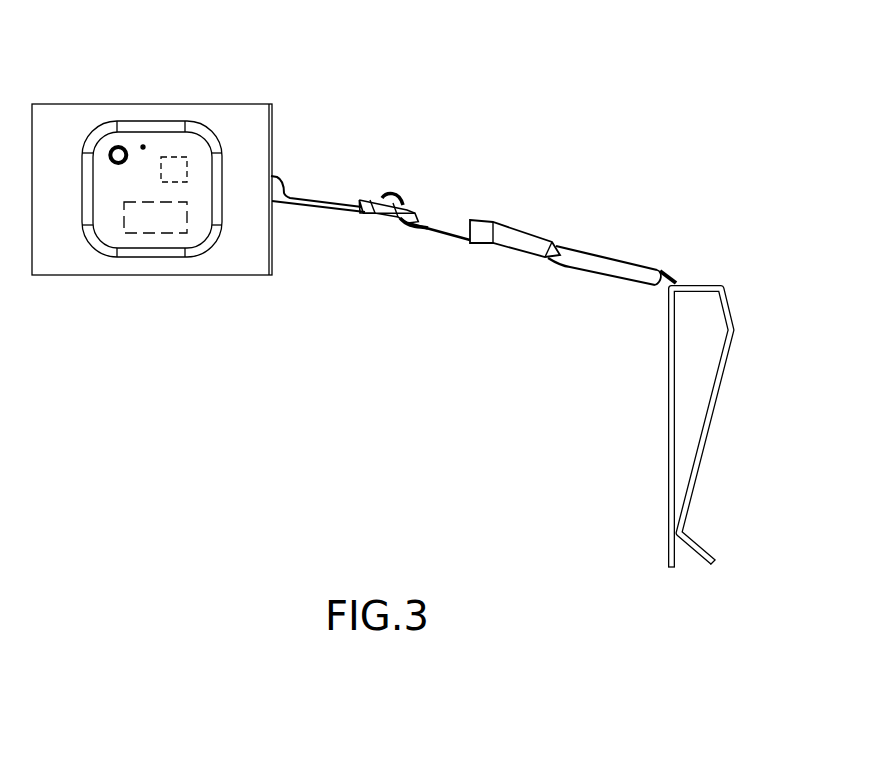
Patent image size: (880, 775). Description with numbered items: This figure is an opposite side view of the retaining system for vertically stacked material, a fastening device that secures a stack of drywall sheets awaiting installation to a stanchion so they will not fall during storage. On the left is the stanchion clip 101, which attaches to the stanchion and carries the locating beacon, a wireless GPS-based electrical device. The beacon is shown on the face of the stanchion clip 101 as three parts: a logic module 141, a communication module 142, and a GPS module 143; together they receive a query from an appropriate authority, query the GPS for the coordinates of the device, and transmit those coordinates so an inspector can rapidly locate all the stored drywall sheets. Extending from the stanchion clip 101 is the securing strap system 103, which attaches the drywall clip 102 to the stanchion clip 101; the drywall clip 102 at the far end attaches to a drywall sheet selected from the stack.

The stanchion clip 101 is at (282, 137).
The drywall clip 102 is at (437, 207).
The securing strap system 103 is at (703, 272).
The logic module 141 is at (183, 158).
The communication module 142 is at (118, 147).
The GPS module 143 is at (152, 217).